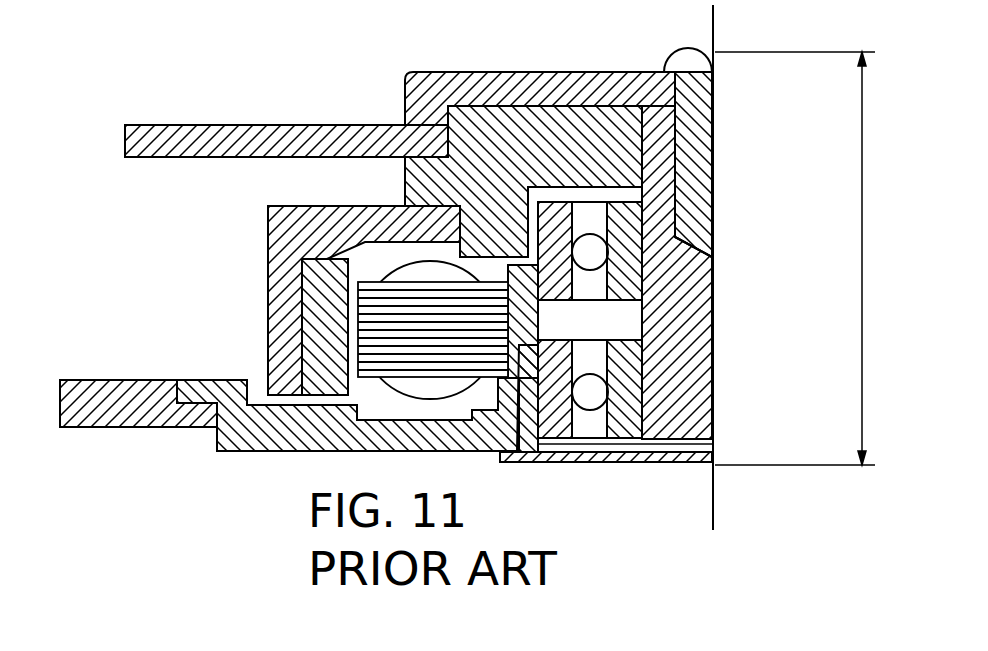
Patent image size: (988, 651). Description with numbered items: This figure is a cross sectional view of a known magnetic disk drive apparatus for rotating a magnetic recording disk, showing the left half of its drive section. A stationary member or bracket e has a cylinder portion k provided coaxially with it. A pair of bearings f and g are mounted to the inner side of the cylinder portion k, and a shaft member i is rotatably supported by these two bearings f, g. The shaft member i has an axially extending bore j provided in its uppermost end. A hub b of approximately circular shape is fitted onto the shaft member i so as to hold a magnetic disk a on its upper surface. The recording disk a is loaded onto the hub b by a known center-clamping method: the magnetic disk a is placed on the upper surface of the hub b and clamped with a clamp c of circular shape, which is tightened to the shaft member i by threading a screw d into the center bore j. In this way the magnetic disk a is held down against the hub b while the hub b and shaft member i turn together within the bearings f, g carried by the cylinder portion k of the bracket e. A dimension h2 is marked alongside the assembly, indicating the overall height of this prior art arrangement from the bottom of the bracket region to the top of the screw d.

The magnetic disk a is at (167, 138).
The hub b is at (487, 120).
The clamp c is at (535, 93).
The screw d is at (681, 58).
The bracket e is at (303, 447).
The bearing f is at (620, 229).
The bearing g is at (592, 444).
The shaft member i is at (694, 361).
The bore j is at (680, 226).
The cylinder portion k is at (510, 455).
The overall height h2 is at (815, 258).